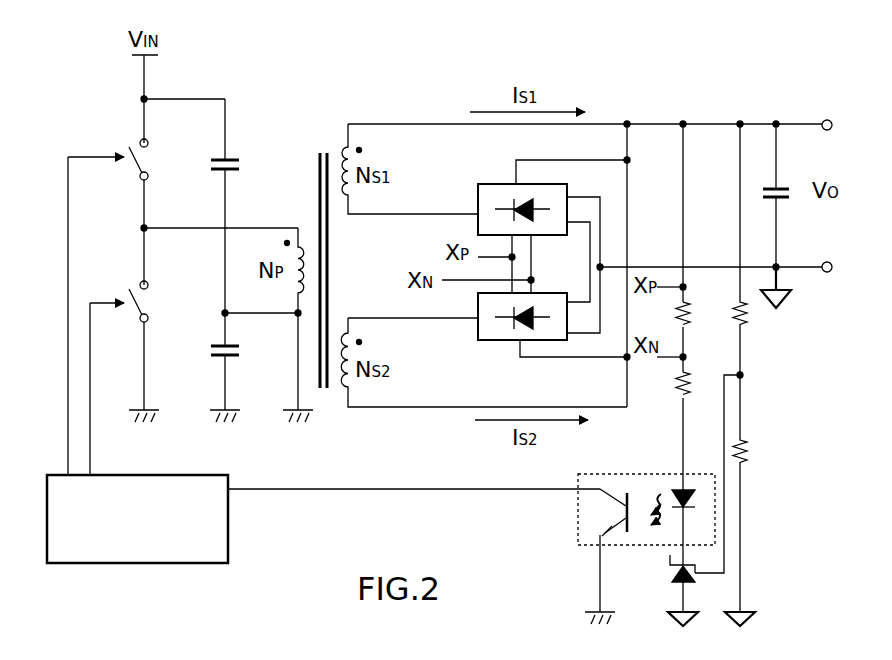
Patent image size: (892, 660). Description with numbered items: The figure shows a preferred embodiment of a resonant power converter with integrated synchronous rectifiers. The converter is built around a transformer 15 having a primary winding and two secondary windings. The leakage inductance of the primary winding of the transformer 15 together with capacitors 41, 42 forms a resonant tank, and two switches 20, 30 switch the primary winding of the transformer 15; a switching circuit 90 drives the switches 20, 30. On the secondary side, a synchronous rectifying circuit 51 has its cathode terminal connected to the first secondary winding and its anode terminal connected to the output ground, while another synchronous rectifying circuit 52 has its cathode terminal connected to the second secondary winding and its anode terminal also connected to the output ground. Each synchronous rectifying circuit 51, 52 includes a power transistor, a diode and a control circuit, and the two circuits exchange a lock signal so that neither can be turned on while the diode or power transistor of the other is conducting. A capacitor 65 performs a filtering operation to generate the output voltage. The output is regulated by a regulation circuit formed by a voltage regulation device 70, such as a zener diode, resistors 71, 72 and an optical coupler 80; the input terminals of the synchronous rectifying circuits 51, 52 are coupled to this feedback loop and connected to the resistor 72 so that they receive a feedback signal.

The transformer 15 is at (320, 140).
The switch 20 is at (152, 157).
The switch 30 is at (152, 303).
The capacitor 41 is at (242, 164).
The capacitor 42 is at (242, 350).
The synchronous rectifying circuit 51 is at (493, 182).
The synchronous rectifying circuit 52 is at (501, 343).
The capacitor 65 is at (792, 190).
The voltage regulation device 70 is at (664, 583).
The resistor 71 is at (668, 398).
The resistor 72 is at (695, 312).
The optical coupler 80 is at (578, 500).
The switching control circuit 90 is at (43, 515).